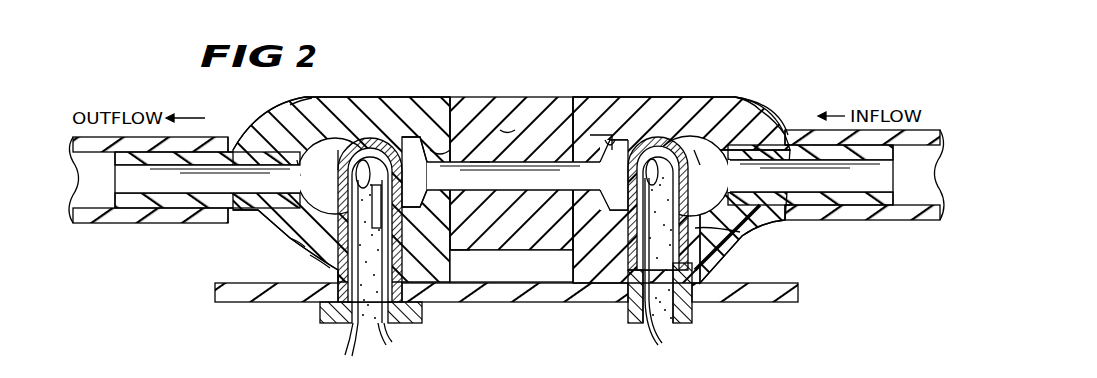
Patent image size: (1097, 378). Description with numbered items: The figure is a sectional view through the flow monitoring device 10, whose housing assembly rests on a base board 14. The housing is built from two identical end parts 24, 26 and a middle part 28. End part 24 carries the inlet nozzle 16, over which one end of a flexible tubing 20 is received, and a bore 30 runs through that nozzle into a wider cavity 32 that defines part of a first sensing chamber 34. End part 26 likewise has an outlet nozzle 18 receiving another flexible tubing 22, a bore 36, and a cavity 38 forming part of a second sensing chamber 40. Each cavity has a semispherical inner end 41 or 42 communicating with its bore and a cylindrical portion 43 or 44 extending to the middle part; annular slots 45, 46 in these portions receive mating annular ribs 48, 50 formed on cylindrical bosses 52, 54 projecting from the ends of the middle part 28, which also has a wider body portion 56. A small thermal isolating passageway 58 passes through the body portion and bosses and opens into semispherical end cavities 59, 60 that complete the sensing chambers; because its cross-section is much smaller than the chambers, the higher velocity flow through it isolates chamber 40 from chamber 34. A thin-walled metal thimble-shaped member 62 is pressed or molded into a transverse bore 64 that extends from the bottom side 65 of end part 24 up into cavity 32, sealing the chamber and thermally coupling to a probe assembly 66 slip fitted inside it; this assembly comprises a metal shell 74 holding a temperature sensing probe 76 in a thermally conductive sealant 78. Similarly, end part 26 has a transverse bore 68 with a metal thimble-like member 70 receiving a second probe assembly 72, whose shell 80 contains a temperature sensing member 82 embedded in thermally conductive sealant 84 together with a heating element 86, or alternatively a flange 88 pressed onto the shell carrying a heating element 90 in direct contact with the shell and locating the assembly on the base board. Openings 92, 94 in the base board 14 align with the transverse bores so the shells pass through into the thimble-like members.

The flow monitoring device 10 is at (513, 292).
The base board 14 is at (225, 298).
The inlet nozzle 16 is at (825, 152).
The outlet nozzle 18 is at (153, 200).
The flexible tubing 20 is at (918, 212).
The flexible tubing 22 is at (103, 220).
The end part 24 is at (681, 225).
The end part 26 is at (341, 176).
The middle part 28 is at (511, 177).
The bore 30 is at (855, 182).
The cavity 32 is at (696, 145).
The first sensing chamber 34 is at (714, 188).
The bore 36 is at (222, 170).
The cavity 38 is at (300, 118).
The second sensing chamber 40 is at (326, 188).
The semispherical inner end 41 is at (732, 118).
The semispherical inner end 42 is at (305, 152).
The cylindrical portion 43 is at (684, 135).
The cylindrical portion 44 is at (338, 140).
The annular slot 45 is at (565, 237).
The annular slot 46 is at (460, 238).
The annular rib 48 is at (577, 130).
The annular rib 50 is at (443, 147).
The cylindrical boss 52 is at (592, 135).
The cylindrical boss 54 is at (480, 160).
The body portion 56 is at (510, 237).
The thermal isolating passageway 58 is at (507, 132).
The semispherical end cavity 59 is at (610, 135).
The semispherical end cavity 60 is at (410, 148).
The thimble-shaped member 62 is at (742, 138).
The transverse bore 64 is at (700, 240).
The bottom side 65 is at (702, 292).
The probe assembly 66 is at (665, 213).
The transverse bore 68 is at (292, 247).
The thimble-like member 70 is at (312, 260).
The second probe assembly 72 is at (369, 224).
The metal shell 74 is at (700, 232).
The temperature sensing probe 76 is at (657, 138).
The thermally conductive sealant 78 is at (667, 316).
The shell 80 is at (395, 268).
The temperature sensing member 82 is at (362, 150).
The thermally conductive sealant 84 is at (360, 340).
The heating element 86 is at (390, 148).
The flange 88 is at (332, 323).
The heating element 90 is at (406, 333).
The opening 92 is at (629, 308).
The opening 94 is at (328, 315).